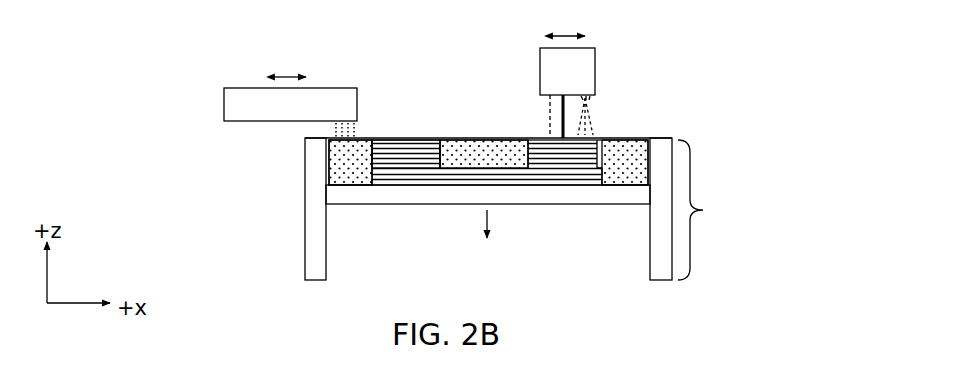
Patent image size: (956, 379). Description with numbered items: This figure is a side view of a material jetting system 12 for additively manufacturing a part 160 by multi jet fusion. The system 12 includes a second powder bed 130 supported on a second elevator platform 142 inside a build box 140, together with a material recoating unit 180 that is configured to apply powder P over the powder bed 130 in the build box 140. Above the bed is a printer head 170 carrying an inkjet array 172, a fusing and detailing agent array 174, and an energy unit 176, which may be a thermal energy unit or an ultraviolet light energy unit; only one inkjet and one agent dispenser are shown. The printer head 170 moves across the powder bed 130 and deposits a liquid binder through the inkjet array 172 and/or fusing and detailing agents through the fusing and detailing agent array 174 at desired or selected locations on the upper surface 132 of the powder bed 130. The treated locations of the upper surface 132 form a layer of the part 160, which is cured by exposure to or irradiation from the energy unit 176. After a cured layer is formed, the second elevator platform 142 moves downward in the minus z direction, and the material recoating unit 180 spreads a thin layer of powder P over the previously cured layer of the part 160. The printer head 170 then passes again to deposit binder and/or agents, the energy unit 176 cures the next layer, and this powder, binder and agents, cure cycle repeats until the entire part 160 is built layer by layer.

The system 12 is at (729, 61).
The second powder bed 130 is at (638, 134).
The upper surface 132 is at (390, 142).
The build box 140 is at (527, 165).
The second elevator platform 142 is at (598, 209).
The part 160 is at (430, 136).
The printer head 170 is at (537, 59).
The inkjet array 172 is at (548, 107).
The fusing and detailing agent array 174 is at (560, 129).
The energy unit 176 is at (597, 100).
The material recoating unit 180 is at (221, 106).
The powder P is at (333, 128).